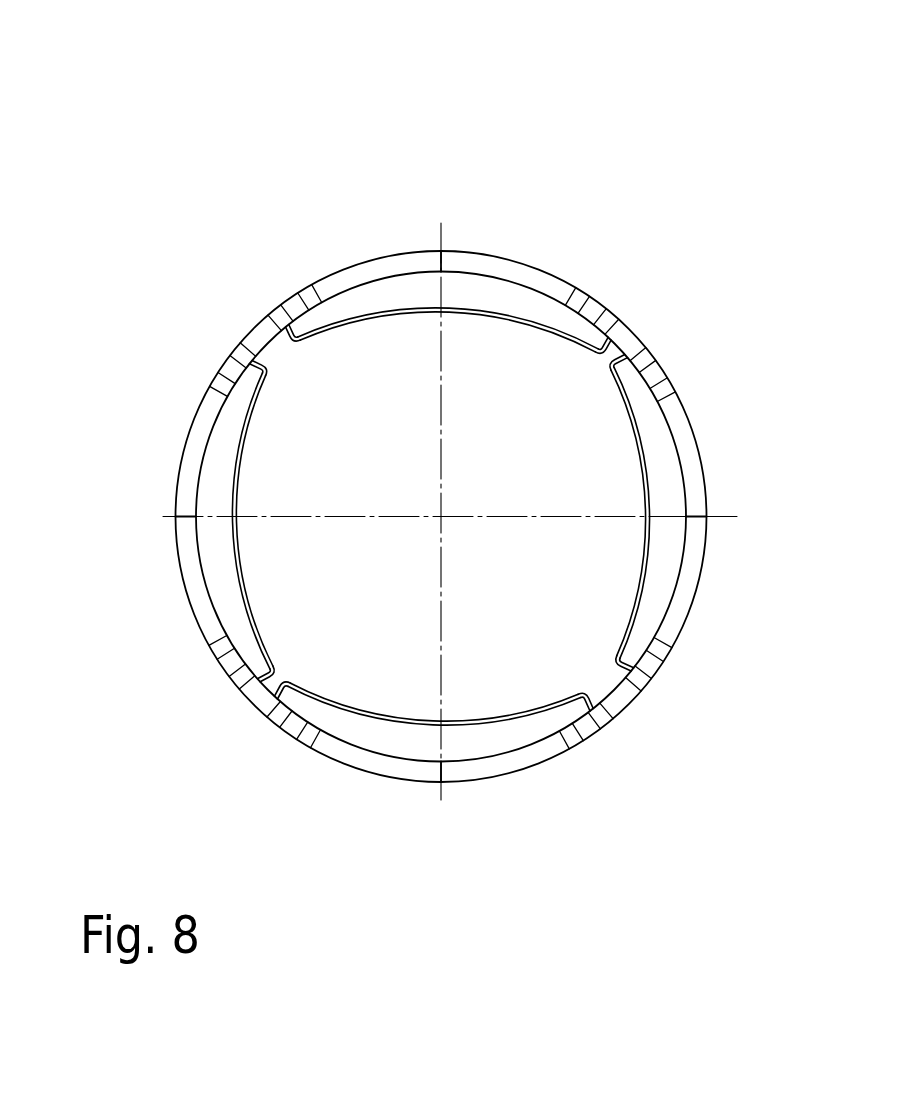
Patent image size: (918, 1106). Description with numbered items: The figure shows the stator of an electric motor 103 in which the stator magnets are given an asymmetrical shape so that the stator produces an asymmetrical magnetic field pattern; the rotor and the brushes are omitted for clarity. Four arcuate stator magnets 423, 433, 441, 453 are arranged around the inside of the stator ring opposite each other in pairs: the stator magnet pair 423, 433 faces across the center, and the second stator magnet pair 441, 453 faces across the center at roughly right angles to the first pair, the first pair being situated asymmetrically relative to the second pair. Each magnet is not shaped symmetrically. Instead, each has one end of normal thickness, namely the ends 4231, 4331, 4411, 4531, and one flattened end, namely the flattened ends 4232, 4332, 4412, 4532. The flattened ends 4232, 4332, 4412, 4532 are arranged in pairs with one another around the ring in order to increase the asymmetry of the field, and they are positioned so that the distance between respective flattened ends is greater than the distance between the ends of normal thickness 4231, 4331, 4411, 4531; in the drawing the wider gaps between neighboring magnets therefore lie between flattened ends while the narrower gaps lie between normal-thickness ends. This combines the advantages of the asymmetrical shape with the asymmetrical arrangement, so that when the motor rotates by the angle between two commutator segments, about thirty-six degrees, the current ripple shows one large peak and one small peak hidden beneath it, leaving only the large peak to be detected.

The motor 103 is at (652, 80).
The stator magnet 423 is at (433, 283).
The end with a normal thickness 4231 is at (582, 330).
The flattened end 4232 is at (298, 290).
The stator magnet 433 is at (425, 747).
The end with a normal thickness 4331 is at (292, 703).
The flattened end 4332 is at (570, 713).
The stator magnet 441 is at (210, 500).
The end with a normal thickness 4411 is at (237, 658).
The flattened end 4412 is at (257, 394).
The stator magnet 453 is at (668, 503).
The end with a normal thickness 4531 is at (627, 378).
The flattened end 4532 is at (630, 645).